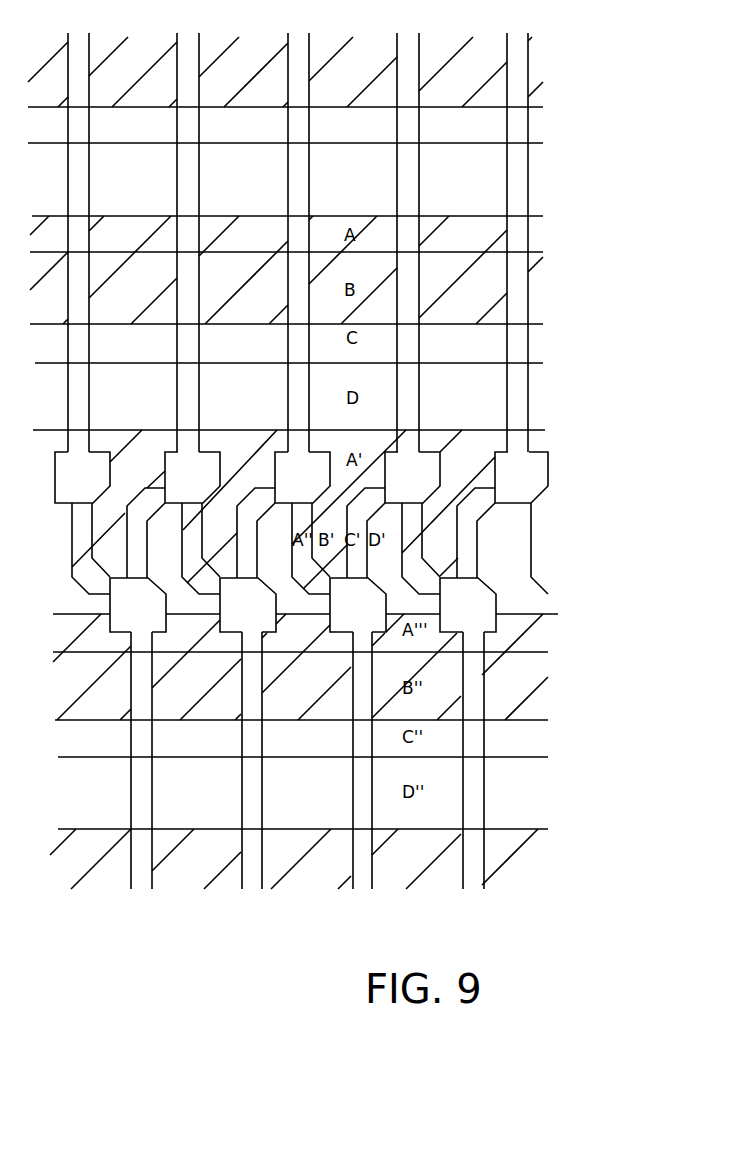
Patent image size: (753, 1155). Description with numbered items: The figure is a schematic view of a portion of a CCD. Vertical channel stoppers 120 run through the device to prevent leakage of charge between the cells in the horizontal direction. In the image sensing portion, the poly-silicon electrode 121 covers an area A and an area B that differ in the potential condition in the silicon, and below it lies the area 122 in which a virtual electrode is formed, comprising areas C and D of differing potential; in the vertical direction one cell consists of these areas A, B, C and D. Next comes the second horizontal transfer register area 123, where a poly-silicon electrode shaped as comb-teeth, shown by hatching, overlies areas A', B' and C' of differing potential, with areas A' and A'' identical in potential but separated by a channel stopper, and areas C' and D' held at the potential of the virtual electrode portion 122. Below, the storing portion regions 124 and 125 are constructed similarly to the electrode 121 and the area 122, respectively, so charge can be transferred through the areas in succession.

The channel stopper 120 is at (409, 37).
The poly-silicon electrode of the image sensing portion 121 is at (560, 218).
The virtual electrode area 122 is at (560, 333).
The second horizontal transfer register area 123 is at (560, 438).
The poly-silicon electrode of the storing portion 124 is at (560, 618).
The virtual electrode area of the storing portion 125 is at (560, 732).